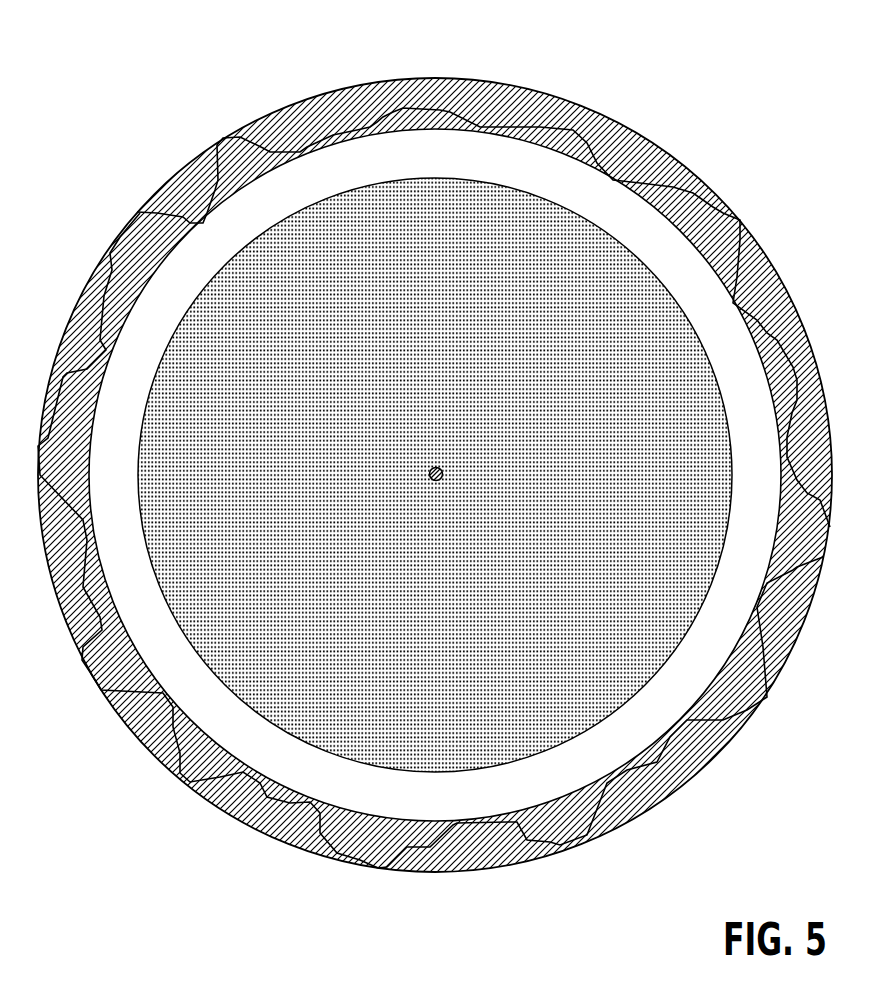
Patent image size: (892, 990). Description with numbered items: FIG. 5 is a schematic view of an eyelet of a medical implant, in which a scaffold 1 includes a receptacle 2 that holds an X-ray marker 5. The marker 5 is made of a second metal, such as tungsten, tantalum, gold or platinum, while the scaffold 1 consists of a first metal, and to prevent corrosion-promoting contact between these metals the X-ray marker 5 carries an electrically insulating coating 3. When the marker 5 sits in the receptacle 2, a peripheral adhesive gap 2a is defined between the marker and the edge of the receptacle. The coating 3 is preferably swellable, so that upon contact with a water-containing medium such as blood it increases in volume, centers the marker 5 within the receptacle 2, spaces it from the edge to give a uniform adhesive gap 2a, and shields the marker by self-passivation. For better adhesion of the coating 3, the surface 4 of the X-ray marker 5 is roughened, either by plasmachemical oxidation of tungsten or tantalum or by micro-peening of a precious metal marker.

The scaffold 1 is at (435, 442).
The receptacle 2 is at (643, 148).
The peripheral adhesive gap 2a is at (607, 127).
The electrically insulating coating 3 is at (690, 207).
The surface 4 is at (512, 162).
The X-ray marker 5 is at (442, 213).